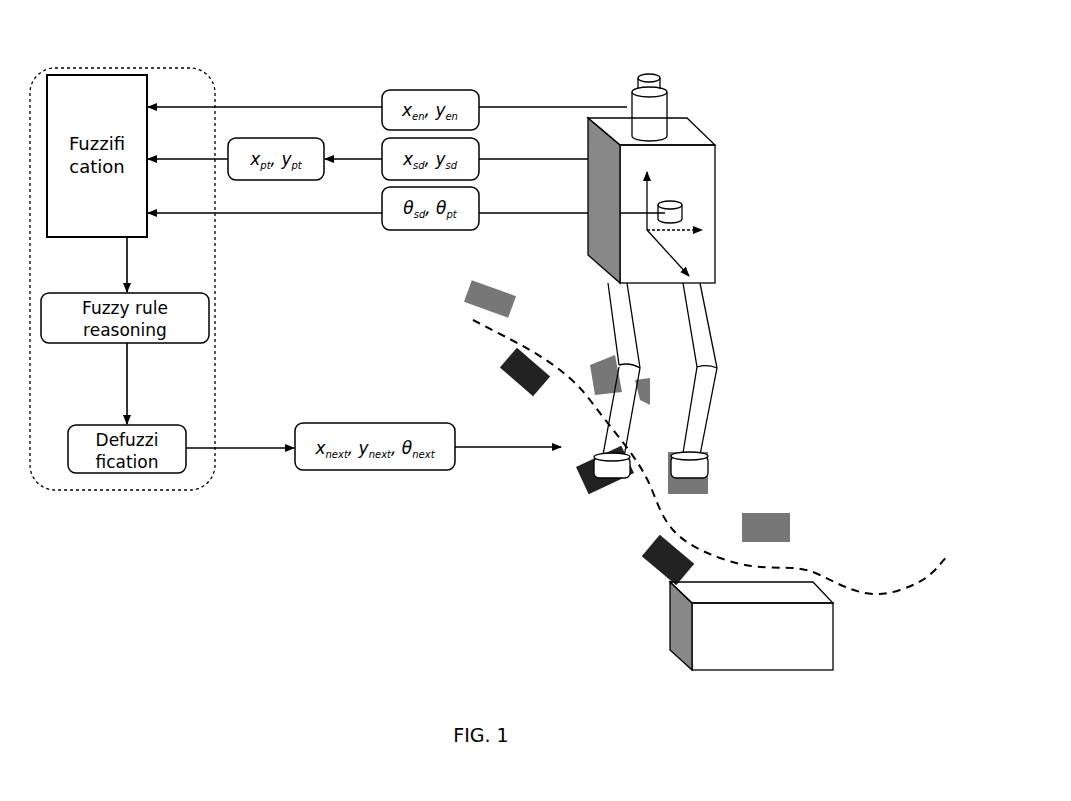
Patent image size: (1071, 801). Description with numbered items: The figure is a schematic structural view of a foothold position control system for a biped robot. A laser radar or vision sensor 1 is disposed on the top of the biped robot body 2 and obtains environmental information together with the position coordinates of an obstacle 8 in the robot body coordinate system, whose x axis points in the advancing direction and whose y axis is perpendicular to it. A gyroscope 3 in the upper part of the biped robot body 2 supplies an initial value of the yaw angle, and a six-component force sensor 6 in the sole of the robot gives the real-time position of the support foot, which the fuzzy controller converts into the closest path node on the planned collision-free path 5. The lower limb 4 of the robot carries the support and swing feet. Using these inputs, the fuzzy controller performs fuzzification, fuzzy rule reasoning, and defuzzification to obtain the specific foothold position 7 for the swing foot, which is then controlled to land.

The laser radar or vision sensor 1 is at (658, 116).
The biped robot body 2 is at (661, 177).
The gyroscope 3 is at (676, 214).
The lower limb 4 is at (709, 334).
The path 5 is at (648, 434).
The six-component force sensor 6 is at (698, 467).
The foothold position 7 is at (669, 549).
The obstacle 8 is at (788, 601).